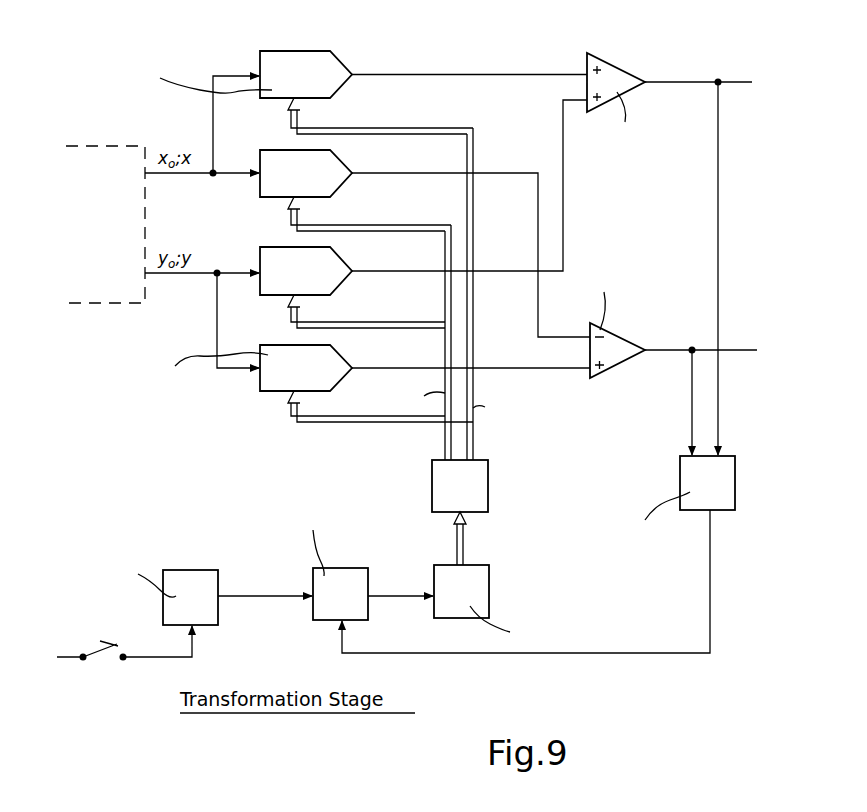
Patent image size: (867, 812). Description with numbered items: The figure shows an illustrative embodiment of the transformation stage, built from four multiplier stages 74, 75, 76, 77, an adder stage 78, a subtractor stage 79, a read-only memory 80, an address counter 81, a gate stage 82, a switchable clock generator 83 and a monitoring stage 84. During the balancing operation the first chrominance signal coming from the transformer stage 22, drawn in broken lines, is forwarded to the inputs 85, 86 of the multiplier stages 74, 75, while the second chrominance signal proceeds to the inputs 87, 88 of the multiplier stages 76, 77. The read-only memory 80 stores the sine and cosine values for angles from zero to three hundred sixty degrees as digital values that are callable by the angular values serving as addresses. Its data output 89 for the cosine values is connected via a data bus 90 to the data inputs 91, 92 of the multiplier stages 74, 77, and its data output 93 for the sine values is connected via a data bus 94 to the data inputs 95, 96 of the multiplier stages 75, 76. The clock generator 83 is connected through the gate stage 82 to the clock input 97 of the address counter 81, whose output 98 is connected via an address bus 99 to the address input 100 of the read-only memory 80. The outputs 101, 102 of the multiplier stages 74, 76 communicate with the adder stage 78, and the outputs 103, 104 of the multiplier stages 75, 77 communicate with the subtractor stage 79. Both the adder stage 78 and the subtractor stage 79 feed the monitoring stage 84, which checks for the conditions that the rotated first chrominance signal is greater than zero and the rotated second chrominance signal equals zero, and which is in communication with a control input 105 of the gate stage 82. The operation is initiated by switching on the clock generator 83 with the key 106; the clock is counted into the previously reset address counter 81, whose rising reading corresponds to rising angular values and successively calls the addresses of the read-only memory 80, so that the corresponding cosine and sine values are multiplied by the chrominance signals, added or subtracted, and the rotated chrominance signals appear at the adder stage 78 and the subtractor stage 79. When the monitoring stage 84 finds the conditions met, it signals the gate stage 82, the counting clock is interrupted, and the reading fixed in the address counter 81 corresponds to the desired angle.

The transformer stage 22 is at (92, 303).
The multiplier stage 74 is at (300, 60).
The multiplier stage 75 is at (278, 160).
The multiplier stage 76 is at (283, 258).
The multiplier stage 77 is at (282, 355).
The adder stage 78 is at (614, 75).
The subtractor stage 79 is at (617, 340).
The read-only memory 80 is at (490, 490).
The address counter 81 is at (489, 597).
The gate stage 82 is at (340, 576).
The clock generator 83 is at (191, 578).
The monitoring stage 84 is at (735, 484).
The input 85 is at (257, 72).
The input 86 is at (258, 186).
The input 87 is at (258, 272).
The input 88 is at (258, 378).
The data output 89 is at (476, 460).
The data bus 90 is at (473, 331).
The data input 91 is at (302, 103).
The data input 92 is at (302, 396).
The data output 93 is at (445, 460).
The data bus 94 is at (445, 304).
The data input 95 is at (302, 202).
The data input 96 is at (302, 300).
The clock input 97 is at (430, 594).
The output 98 is at (470, 566).
The address bus 99 is at (457, 549).
The address input 100 is at (474, 520).
The output 101 is at (348, 74).
The output 102 is at (355, 270).
The output 103 is at (350, 173).
The output 104 is at (352, 368).
The control input 105 is at (350, 622).
The key 106 is at (105, 660).